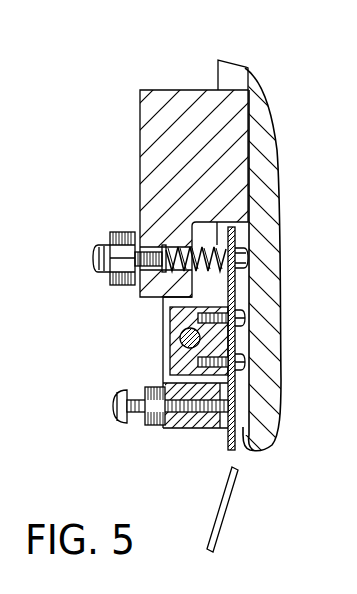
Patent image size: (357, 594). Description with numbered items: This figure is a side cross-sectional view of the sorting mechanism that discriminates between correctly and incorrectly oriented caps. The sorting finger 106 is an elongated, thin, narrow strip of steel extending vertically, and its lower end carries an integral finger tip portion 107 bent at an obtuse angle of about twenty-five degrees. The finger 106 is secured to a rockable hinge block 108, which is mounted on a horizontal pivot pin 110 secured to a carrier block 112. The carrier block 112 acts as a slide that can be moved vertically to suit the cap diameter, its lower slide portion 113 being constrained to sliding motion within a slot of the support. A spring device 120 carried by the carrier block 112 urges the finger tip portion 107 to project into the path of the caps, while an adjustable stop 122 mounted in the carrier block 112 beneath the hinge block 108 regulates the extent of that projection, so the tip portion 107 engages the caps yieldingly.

The sorting finger 106 is at (243, 450).
The finger tip portion 107 is at (218, 526).
The hinge block 108 is at (170, 357).
The pivot pin 110 is at (180, 338).
The carrier block 112 is at (138, 108).
The lower slide portion 113 is at (226, 90).
The spring device 120 is at (206, 271).
The adjustable stop 122 is at (220, 436).